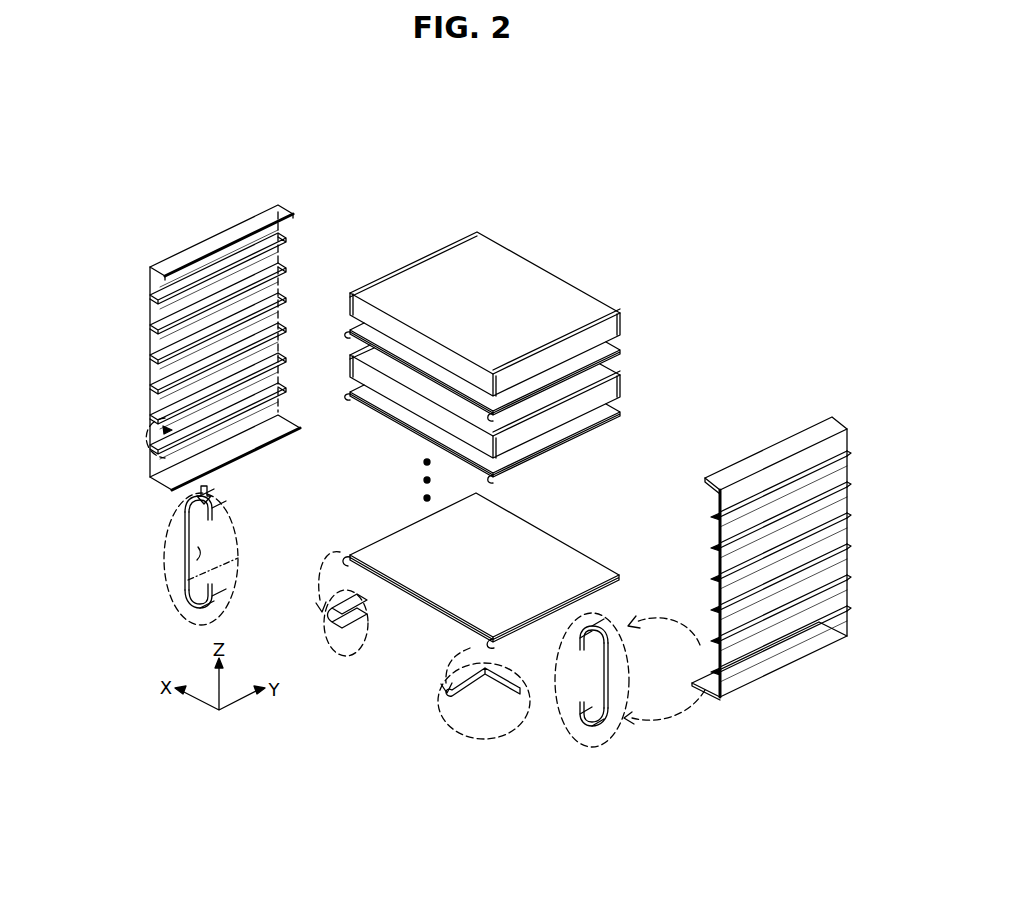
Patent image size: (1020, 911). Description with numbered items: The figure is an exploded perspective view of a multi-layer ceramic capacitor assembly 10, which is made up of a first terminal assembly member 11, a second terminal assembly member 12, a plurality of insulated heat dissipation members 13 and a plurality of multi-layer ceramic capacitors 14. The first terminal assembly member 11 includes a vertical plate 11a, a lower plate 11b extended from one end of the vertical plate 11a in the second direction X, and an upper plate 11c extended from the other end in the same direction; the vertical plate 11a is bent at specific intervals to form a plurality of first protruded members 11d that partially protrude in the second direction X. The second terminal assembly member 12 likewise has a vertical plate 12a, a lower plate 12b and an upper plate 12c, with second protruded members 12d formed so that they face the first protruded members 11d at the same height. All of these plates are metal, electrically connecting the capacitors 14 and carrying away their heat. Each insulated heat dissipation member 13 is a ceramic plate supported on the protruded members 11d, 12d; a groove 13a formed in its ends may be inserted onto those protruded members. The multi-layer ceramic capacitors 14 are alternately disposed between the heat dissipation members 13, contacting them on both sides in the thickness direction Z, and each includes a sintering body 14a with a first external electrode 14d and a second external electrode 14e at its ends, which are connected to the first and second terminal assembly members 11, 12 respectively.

The multi-layer ceramic capacitor assembly 10 is at (469, 178).
The first terminal assembly member 11 is at (238, 203).
The vertical plate 11a is at (158, 345).
The lower plate 11b is at (166, 478).
The upper plate 11c is at (187, 254).
The first protruded member 11d is at (156, 300).
The second terminal assembly member 12 is at (778, 420).
The vertical plate 12a is at (738, 552).
The lower plate 12b is at (711, 686).
The upper plate 12c is at (746, 465).
The second protruded member 12d is at (714, 512).
The insulated heat dissipation member 13 is at (618, 347).
The groove 13a is at (350, 660).
The multi-layer ceramic capacitor 14 is at (605, 229).
The sintering body 14a is at (548, 278).
The first external electrode 14d is at (476, 230).
The second external electrode 14e is at (598, 331).